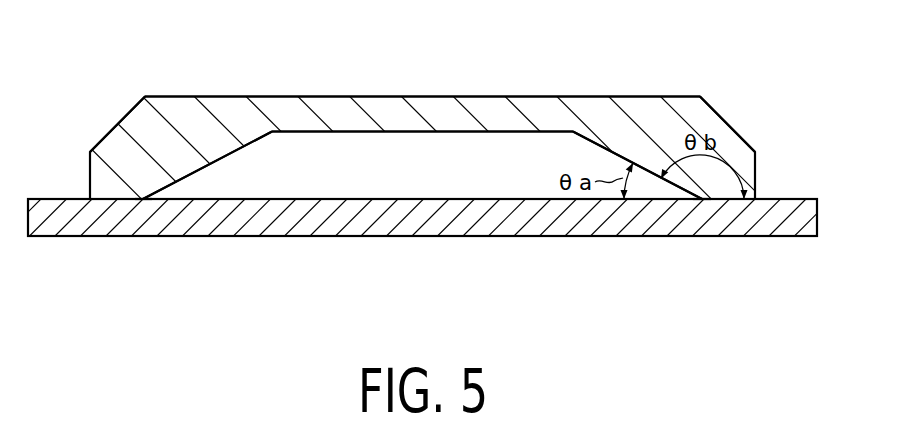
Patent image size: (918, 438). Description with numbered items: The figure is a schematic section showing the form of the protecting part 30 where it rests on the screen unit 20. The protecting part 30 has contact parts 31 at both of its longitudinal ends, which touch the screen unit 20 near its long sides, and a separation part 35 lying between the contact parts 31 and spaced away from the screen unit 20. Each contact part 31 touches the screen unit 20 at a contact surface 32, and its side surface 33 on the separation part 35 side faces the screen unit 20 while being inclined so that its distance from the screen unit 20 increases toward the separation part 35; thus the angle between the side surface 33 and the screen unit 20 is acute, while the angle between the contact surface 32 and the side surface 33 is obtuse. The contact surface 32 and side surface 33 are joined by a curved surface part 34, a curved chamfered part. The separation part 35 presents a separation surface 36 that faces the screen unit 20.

The screen unit 20 is at (328, 200).
The protecting part 30 is at (296, 74).
The contact part 31 is at (137, 140).
The contact surface 32 is at (117, 200).
The side surface 33 is at (208, 165).
The curved surface part 34 is at (160, 200).
The separation part 35 is at (418, 110).
The separation surface 36 is at (423, 132).